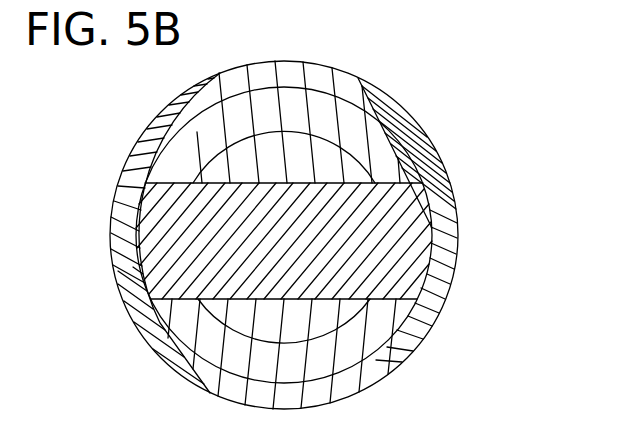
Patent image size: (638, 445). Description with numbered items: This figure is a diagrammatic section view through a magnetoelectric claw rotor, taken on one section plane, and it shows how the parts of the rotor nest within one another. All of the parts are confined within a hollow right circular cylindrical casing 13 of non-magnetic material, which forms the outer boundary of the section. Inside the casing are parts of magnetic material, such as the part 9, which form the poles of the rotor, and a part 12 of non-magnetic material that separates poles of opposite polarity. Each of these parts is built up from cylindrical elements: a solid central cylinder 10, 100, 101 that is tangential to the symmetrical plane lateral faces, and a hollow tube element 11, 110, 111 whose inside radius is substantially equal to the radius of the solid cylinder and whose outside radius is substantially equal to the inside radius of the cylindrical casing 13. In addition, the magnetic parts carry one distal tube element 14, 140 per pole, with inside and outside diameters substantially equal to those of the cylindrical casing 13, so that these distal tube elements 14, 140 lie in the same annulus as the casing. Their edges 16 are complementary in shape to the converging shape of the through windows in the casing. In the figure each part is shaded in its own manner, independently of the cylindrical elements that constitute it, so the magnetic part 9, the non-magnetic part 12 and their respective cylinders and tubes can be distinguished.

The part of magnetic material 9 is at (253, 368).
The solid central cylinder 10 is at (245, 162).
The hollow tube element 11 is at (355, 138).
The part of non-magnetic material 12 is at (158, 267).
The cylindrical casing 13 is at (435, 305).
The distal tube element 14 is at (313, 77).
The edges 16 is at (383, 120).
The solid central cylinder 100 is at (177, 342).
The solid central cylinder 101 is at (205, 217).
The hollow tube element 110 is at (373, 337).
The hollow tube element 111 is at (435, 238).
The distal tube element 140 is at (317, 396).